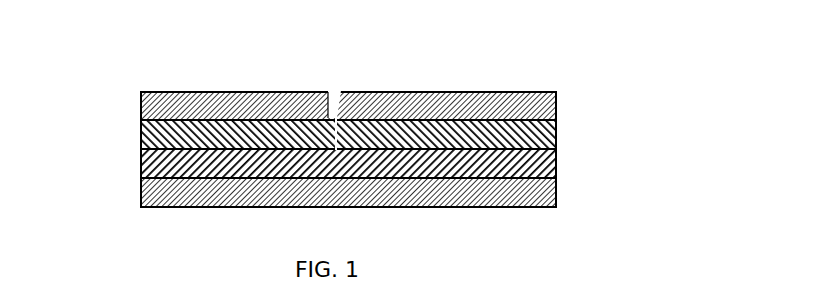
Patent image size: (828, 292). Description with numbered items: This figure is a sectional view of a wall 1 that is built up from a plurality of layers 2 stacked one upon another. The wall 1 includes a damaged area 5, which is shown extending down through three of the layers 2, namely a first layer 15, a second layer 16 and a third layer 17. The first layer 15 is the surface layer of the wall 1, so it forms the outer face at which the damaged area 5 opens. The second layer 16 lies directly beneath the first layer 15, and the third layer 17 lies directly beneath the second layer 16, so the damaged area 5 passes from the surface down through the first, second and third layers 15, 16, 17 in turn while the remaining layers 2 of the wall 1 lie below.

The wall 1 is at (375, 109).
The layers 2 is at (130, 194).
The damaged area 5 is at (357, 88).
The first layer 15 is at (523, 93).
The second layer 16 is at (533, 127).
The third layer 17 is at (536, 159).